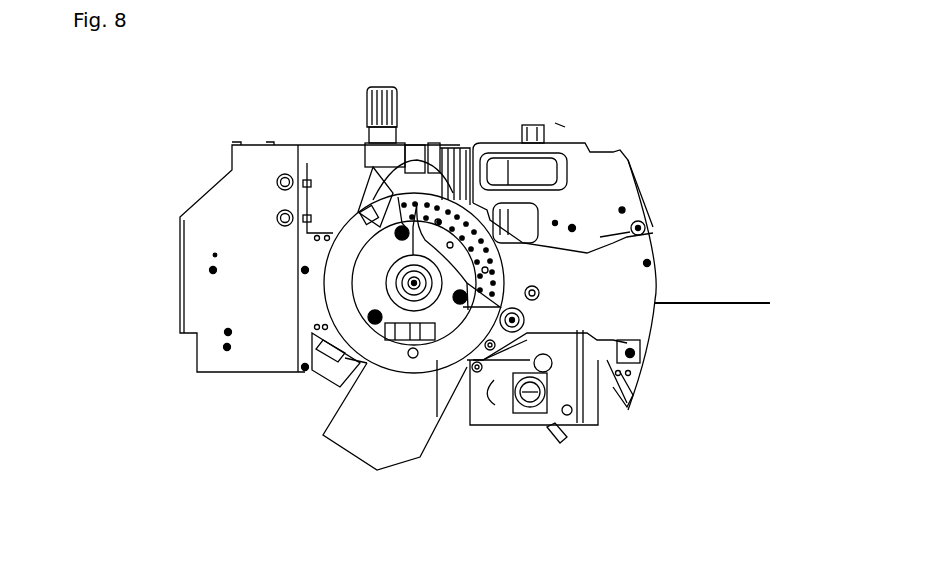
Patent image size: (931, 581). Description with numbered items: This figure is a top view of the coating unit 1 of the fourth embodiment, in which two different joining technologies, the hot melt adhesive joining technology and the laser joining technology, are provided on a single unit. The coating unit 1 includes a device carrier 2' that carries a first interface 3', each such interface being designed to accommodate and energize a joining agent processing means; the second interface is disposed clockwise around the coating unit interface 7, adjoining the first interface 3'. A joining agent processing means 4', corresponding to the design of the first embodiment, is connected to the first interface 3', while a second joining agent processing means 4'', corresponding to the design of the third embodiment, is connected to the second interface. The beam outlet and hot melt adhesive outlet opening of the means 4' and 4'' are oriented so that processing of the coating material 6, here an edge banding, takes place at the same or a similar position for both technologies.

The coating unit 1 is at (150, 193).
The device carrier 2' is at (622, 285).
The first interface 3' is at (580, 367).
The joining agent processing means 4' is at (546, 423).
The joining agent processing means 4'' is at (415, 453).
The coating material 6 is at (707, 307).
The coating unit interface 7 is at (518, 143).